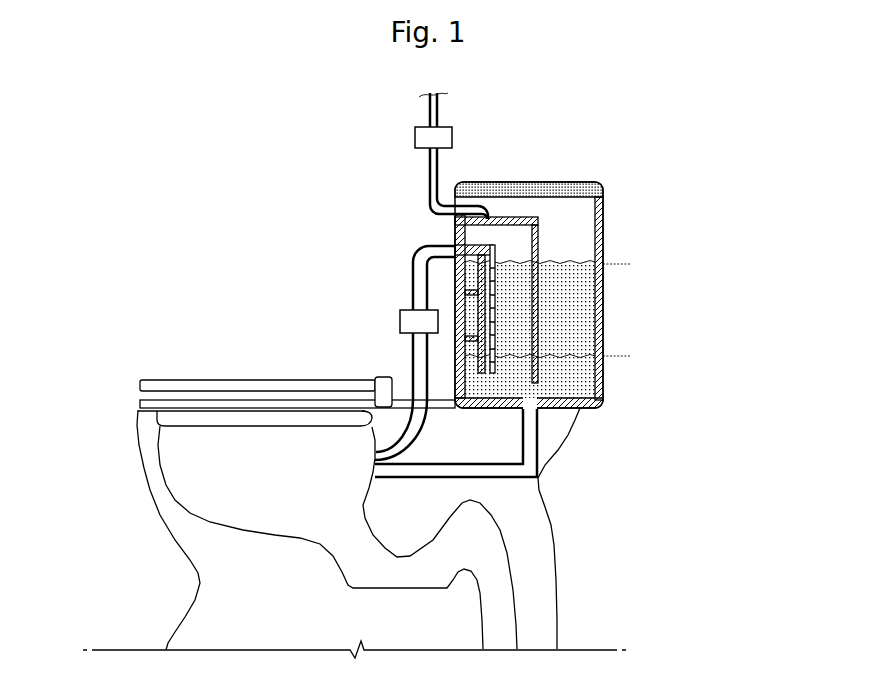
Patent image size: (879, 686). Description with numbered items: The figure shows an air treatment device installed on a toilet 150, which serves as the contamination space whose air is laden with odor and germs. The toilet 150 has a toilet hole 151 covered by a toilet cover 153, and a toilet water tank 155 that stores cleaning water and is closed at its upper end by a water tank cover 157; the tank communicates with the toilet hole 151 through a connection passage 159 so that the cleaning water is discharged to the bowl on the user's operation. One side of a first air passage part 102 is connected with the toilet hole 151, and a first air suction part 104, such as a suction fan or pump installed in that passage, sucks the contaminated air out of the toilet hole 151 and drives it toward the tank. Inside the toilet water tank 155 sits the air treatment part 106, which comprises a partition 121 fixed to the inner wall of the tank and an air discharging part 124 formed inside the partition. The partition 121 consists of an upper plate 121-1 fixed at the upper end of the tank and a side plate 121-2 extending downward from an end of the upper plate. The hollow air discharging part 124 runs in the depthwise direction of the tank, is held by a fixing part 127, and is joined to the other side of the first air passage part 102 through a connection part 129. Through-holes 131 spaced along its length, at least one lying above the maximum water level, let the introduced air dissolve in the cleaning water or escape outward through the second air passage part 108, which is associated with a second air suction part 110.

The first air passage part 102 is at (410, 355).
The first air suction part 104 is at (400, 320).
The air treatment part 106 is at (578, 254).
The second air passage part 108 is at (428, 175).
The second air suction part 110 is at (415, 138).
The partition 121 is at (537, 183).
The upper plate 121-1 is at (517, 200).
The side plate 121-2 is at (497, 340).
The air discharging part 124 is at (495, 255).
The fixing part 127 is at (457, 275).
The connection part 129 is at (482, 223).
The through-hole 131 is at (490, 292).
The toilet 150 is at (304, 529).
The toilet hole 151 is at (167, 447).
The toilet cover 153 is at (207, 383).
The toilet water tank 155 is at (605, 212).
The water tank cover 157 is at (592, 186).
The connection passage 159 is at (540, 440).